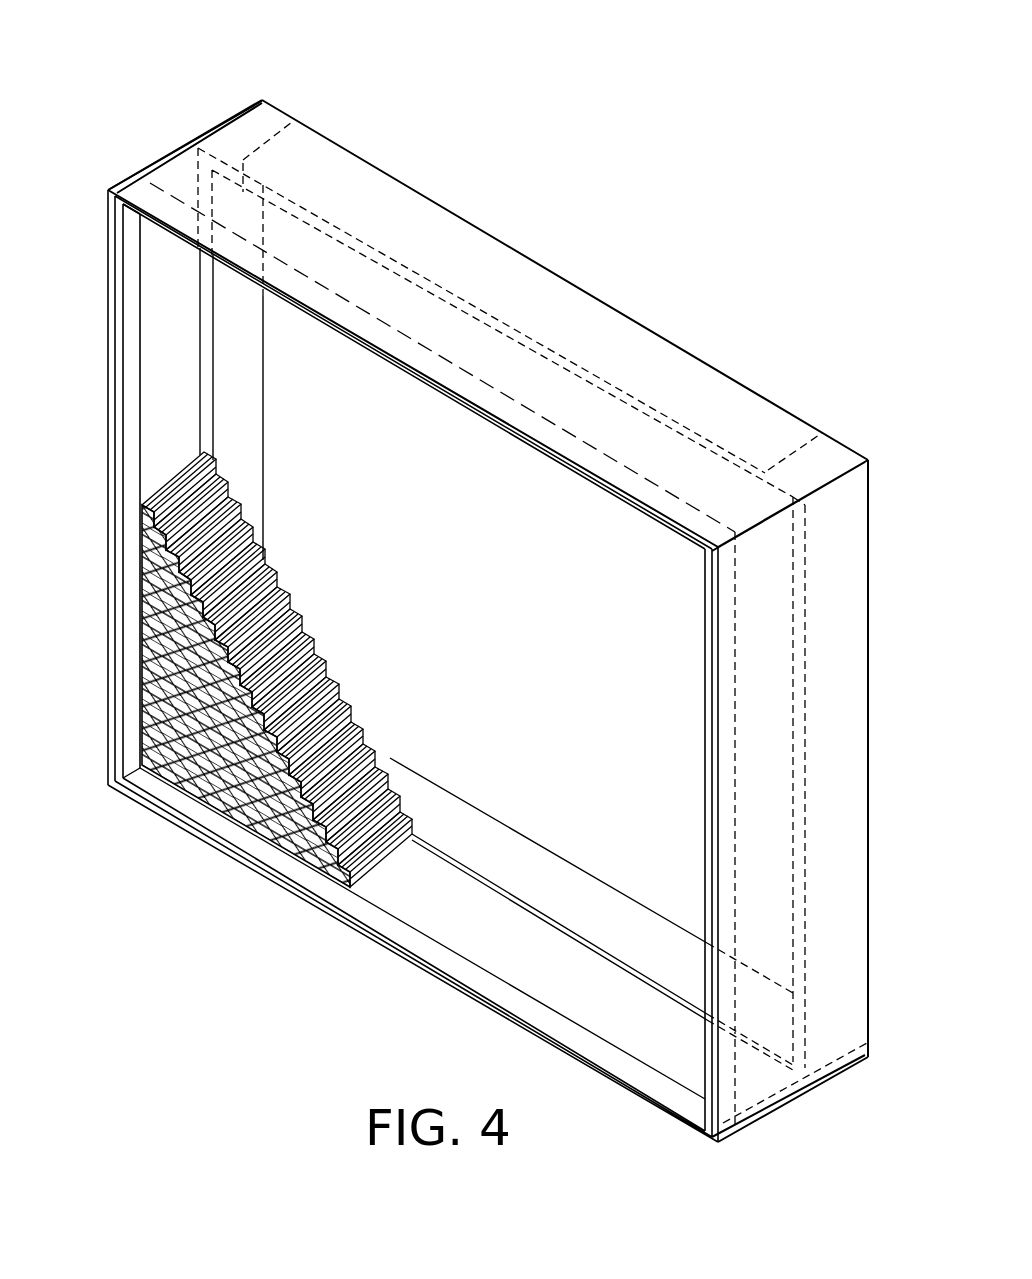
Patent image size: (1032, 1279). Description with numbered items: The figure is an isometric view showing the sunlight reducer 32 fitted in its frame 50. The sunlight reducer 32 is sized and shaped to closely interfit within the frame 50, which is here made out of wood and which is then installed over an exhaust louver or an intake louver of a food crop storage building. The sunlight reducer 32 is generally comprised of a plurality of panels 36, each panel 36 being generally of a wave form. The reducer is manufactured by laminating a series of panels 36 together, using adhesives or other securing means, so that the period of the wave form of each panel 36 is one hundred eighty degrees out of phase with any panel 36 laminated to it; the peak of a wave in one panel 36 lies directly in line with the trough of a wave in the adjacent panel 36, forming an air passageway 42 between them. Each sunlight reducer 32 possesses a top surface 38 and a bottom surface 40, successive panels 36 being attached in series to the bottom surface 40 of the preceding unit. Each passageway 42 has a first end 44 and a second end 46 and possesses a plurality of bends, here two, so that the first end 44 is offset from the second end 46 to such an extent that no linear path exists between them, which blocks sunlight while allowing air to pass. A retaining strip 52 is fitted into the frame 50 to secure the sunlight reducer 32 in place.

The sunlight reducer 32 is at (640, 172).
The panel 36 is at (315, 633).
The top surface 38 is at (401, 212).
The bottom surface 40 is at (462, 990).
The air passageway 42 is at (184, 684).
The first end 44 is at (108, 440).
The second end 46 is at (836, 826).
The frame 50 is at (229, 122).
The retaining strip 52 is at (336, 883).